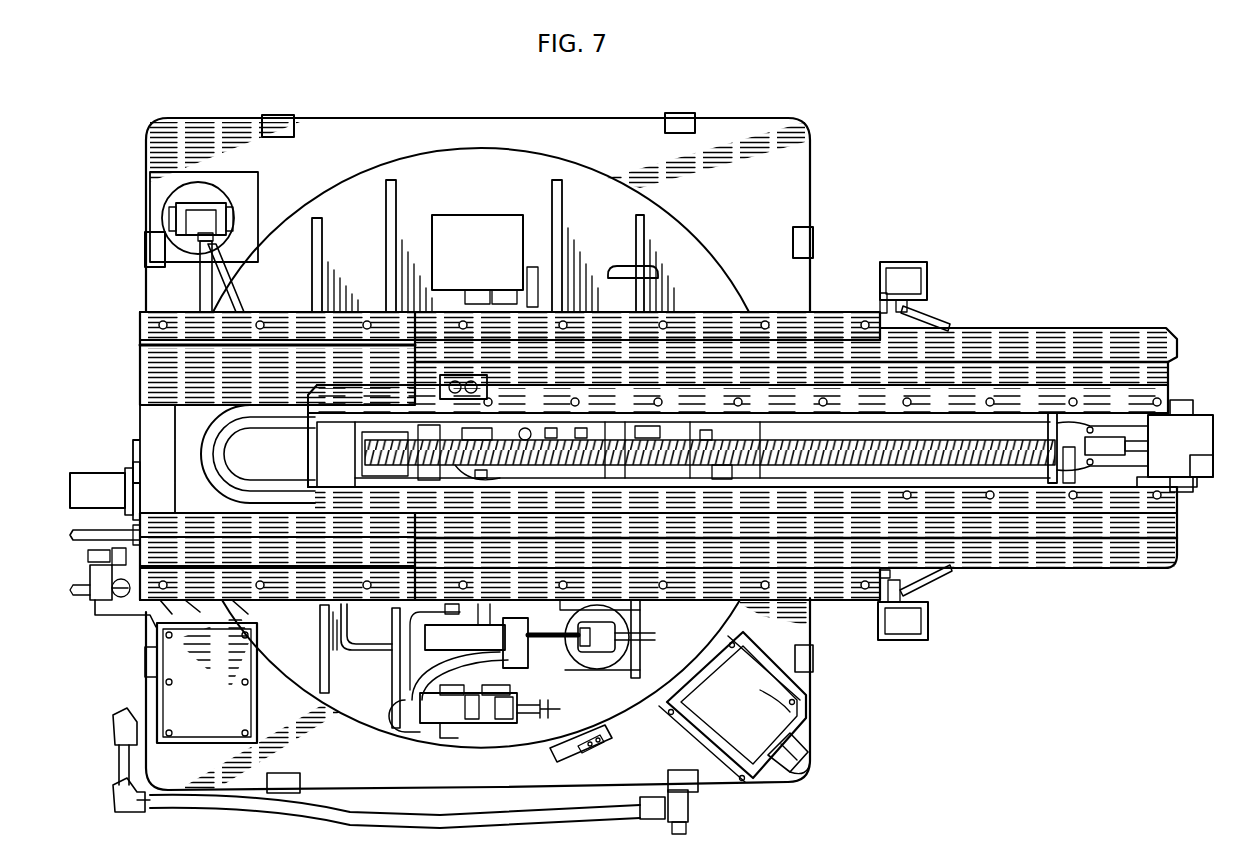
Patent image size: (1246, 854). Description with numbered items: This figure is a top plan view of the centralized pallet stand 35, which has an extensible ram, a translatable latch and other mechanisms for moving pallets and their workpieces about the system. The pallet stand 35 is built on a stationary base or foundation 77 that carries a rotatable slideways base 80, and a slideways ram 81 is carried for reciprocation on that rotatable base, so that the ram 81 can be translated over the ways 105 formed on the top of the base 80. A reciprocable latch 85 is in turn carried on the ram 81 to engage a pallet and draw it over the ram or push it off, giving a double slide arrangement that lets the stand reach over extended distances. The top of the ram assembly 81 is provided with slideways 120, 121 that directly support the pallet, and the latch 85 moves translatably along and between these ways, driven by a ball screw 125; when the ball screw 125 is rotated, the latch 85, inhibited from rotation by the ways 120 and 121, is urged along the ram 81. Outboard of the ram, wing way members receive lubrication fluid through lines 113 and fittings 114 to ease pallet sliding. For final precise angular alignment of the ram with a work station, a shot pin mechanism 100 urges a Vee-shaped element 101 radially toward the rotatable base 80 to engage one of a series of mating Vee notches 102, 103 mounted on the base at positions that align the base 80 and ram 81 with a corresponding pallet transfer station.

The pallet stand 35 is at (811, 114).
The stationary base 77 is at (342, 763).
The rotatable slideways base 80 is at (604, 232).
The slideways ram 81 is at (1098, 345).
The reciprocable latch 85 is at (1212, 412).
The shot pin mechanism 100 is at (763, 728).
The Vee-shaped element 101 is at (703, 698).
The Vee notch 102 is at (698, 698).
The Vee notch 103 is at (597, 757).
The ways 105 is at (279, 552).
The lubrication lines 113 is at (937, 328).
The fittings 114 is at (899, 276).
The slideway 120 is at (1042, 340).
The slideway 121 is at (938, 565).
The ball screw 125 is at (782, 440).